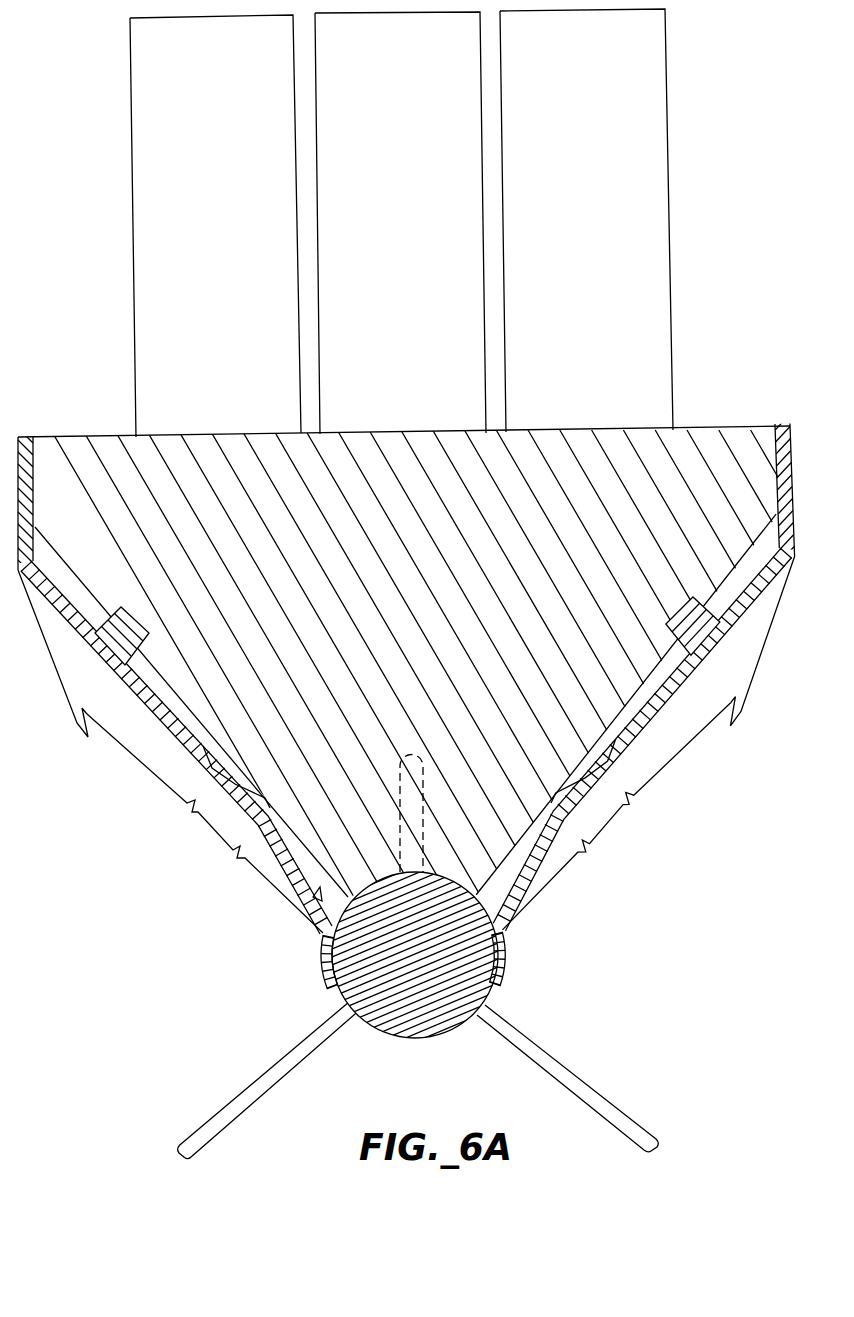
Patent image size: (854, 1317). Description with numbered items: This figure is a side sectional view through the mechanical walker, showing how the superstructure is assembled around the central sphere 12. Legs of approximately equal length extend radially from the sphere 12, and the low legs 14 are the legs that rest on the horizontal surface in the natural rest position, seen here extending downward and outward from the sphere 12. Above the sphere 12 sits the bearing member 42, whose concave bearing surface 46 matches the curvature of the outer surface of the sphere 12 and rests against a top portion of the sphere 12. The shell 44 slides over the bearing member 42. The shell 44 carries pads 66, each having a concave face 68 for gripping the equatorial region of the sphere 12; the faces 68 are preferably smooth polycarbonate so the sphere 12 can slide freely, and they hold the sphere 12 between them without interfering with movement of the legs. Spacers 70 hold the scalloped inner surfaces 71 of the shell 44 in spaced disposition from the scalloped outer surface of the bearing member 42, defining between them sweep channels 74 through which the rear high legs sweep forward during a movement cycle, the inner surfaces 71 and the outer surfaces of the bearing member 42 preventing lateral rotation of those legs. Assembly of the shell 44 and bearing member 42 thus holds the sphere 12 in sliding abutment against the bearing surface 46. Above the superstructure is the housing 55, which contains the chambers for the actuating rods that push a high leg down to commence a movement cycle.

The central sphere 12 is at (495, 990).
The low legs 14 is at (218, 1118).
The bearing member 42 is at (700, 425).
The shell 44 is at (650, 770).
The bearing surface 46 is at (442, 876).
The housing 55 is at (148, 165).
The pads 66 is at (505, 960).
The concave face 68 is at (345, 985).
The spacers 70 is at (100, 643).
The scalloped inner surfaces 71 is at (316, 895).
The sweep channels 74 is at (157, 703).